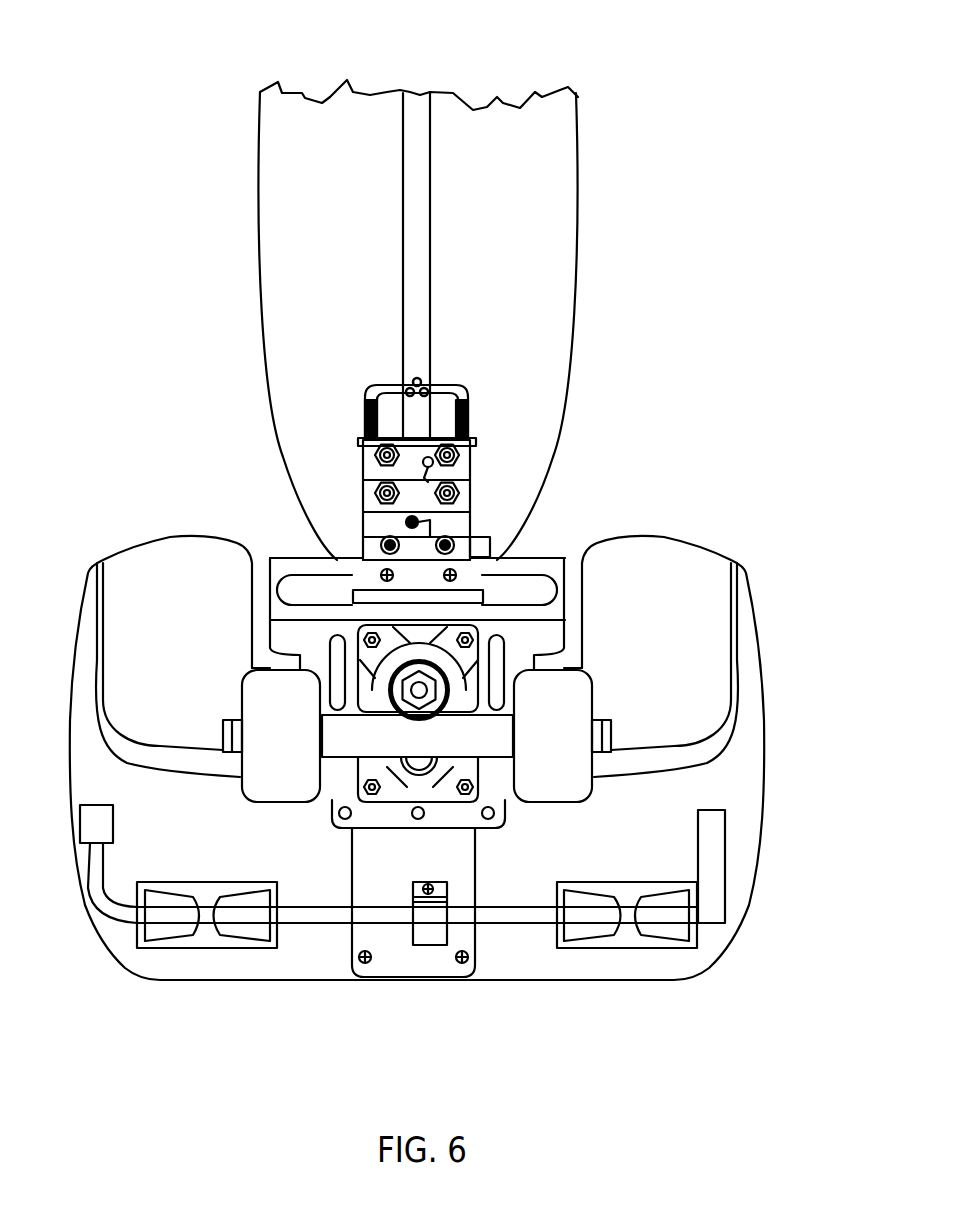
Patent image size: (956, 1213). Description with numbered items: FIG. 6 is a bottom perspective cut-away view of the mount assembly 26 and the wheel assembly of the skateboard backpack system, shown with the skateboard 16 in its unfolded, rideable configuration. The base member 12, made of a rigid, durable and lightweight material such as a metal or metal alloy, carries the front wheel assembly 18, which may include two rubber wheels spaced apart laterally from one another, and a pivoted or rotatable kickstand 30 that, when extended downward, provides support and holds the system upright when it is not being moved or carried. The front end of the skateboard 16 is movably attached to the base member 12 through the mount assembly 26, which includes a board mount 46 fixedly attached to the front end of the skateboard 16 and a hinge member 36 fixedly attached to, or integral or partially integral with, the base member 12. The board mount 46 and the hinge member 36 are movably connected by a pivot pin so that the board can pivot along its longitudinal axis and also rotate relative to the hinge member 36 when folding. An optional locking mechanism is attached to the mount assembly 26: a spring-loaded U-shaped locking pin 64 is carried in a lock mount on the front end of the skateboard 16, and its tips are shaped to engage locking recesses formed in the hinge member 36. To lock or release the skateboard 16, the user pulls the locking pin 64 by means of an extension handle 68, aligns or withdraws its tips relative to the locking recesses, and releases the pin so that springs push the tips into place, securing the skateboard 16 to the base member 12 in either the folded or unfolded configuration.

The base member 12 is at (312, 648).
The skateboard 16 is at (550, 227).
The front wheel assembly 18 is at (550, 713).
The mount assembly 26 is at (247, 335).
The kickstand 30 is at (737, 855).
The hinge member 36 is at (420, 573).
The board mount 46 is at (357, 497).
The locking pin 64 is at (468, 410).
The extension handle 68 is at (422, 105).